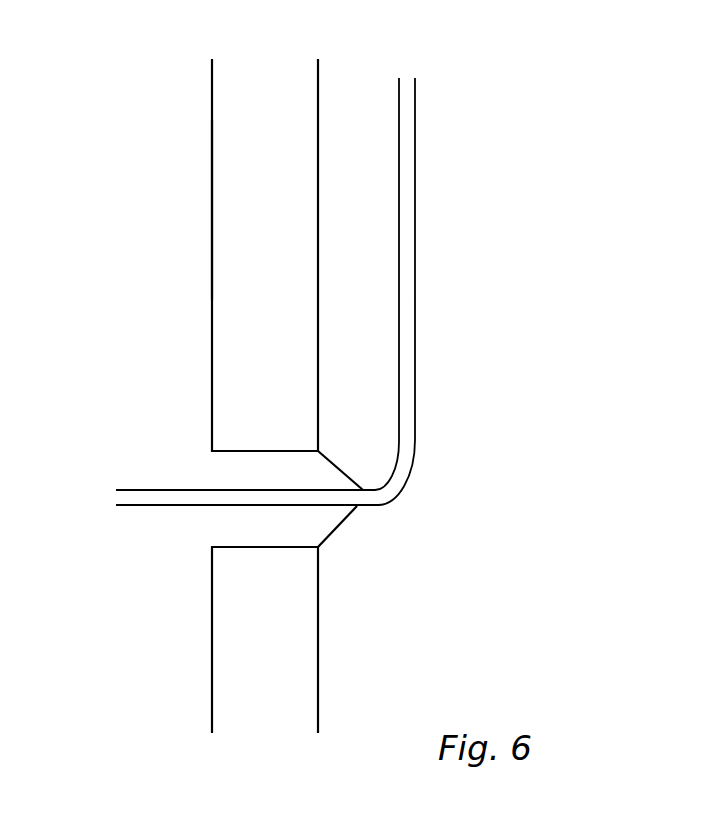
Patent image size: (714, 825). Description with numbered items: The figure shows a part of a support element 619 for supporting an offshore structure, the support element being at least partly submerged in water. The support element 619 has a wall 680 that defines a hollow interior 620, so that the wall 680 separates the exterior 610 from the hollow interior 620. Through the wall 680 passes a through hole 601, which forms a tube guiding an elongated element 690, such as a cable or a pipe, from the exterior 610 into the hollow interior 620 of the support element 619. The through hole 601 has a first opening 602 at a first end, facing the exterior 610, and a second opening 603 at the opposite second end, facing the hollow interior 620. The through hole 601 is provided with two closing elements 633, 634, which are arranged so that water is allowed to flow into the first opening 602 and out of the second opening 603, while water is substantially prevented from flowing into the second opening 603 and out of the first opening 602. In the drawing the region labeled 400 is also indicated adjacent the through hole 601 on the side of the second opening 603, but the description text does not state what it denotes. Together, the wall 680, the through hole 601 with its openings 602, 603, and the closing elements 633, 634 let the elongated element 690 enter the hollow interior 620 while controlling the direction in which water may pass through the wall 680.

The substrate 400 is at (181, 546).
The through hole 601 is at (288, 538).
The first opening 602 is at (181, 475).
The second opening 603 is at (373, 558).
The exterior 610 is at (76, 238).
The support element 619 is at (435, 30).
The hollow interior 620 is at (609, 236).
The closing element 633 is at (340, 468).
The closing element 634 is at (353, 512).
The wall 680 is at (212, 198).
The elongated element 690 is at (415, 233).